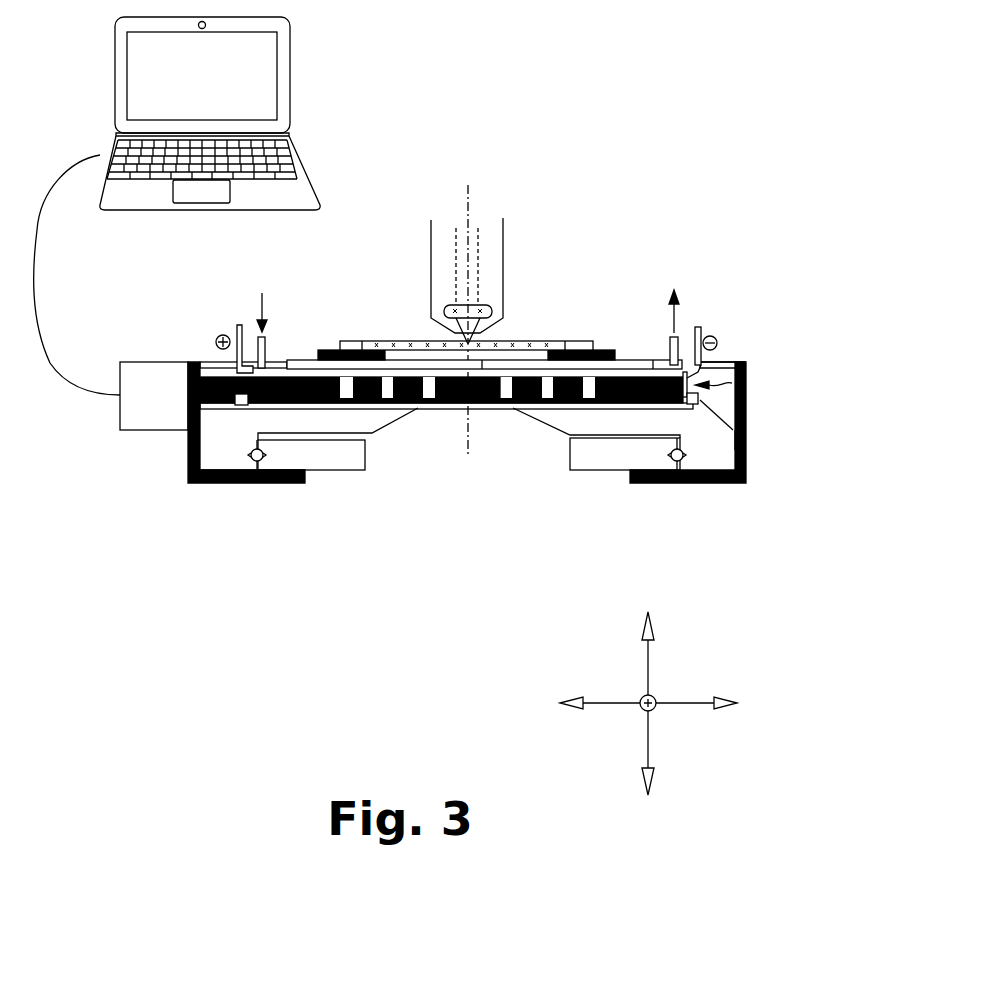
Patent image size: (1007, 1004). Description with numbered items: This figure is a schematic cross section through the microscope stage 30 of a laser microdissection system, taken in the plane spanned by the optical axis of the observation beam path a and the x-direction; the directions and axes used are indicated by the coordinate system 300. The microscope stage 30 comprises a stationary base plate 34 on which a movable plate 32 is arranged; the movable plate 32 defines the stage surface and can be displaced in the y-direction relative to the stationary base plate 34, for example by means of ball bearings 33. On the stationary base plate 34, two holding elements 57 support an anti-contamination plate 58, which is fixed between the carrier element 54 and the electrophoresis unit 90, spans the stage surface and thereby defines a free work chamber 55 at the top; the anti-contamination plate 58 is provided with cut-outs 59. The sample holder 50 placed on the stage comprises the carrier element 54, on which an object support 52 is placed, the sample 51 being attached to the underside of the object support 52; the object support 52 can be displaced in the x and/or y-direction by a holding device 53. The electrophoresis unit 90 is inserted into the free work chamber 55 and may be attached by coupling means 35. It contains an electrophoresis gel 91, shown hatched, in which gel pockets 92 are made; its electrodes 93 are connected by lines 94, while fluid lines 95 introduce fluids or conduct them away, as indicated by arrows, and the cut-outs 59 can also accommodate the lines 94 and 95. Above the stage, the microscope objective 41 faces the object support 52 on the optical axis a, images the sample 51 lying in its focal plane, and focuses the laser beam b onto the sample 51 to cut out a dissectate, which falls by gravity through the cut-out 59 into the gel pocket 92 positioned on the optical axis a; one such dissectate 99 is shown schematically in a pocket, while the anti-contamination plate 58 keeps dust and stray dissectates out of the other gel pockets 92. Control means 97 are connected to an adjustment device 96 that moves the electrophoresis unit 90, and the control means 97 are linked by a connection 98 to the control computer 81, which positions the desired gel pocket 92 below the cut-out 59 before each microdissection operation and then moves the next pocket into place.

The microscope stage 30 is at (171, 445).
The movable plate 32 is at (238, 484).
The ball bearings 33 is at (257, 472).
The stationary base plate 34 is at (320, 465).
The coupling means 35 is at (747, 440).
The microscope objective 41 is at (434, 232).
The sample holder 50 is at (593, 243).
The sample 51 is at (437, 352).
The object support 52 is at (542, 342).
The holding device 53 is at (337, 350).
The carrier element 54 is at (335, 348).
The free work chamber 55 is at (747, 369).
The holding elements 57 is at (188, 470).
The anti-contamination plate 58 is at (722, 360).
The cut-outs 59 is at (483, 368).
The control computer 81 is at (322, 141).
The electrophoresis unit 90 is at (747, 404).
The electrophoresis gel 91 is at (492, 405).
The gel pockets 92 is at (429, 405).
The electrodes 93 is at (243, 405).
The lines 94 is at (238, 335).
The fluid lines 95 is at (256, 300).
The adjustment device 96 is at (228, 377).
The control means 97 is at (167, 362).
The connection 98 is at (43, 232).
The dissectate 99 is at (460, 405).
The coordinate system 300 is at (554, 645).
The optical axis of the observation beam path a is at (467, 285).
The laser beam b is at (473, 250).